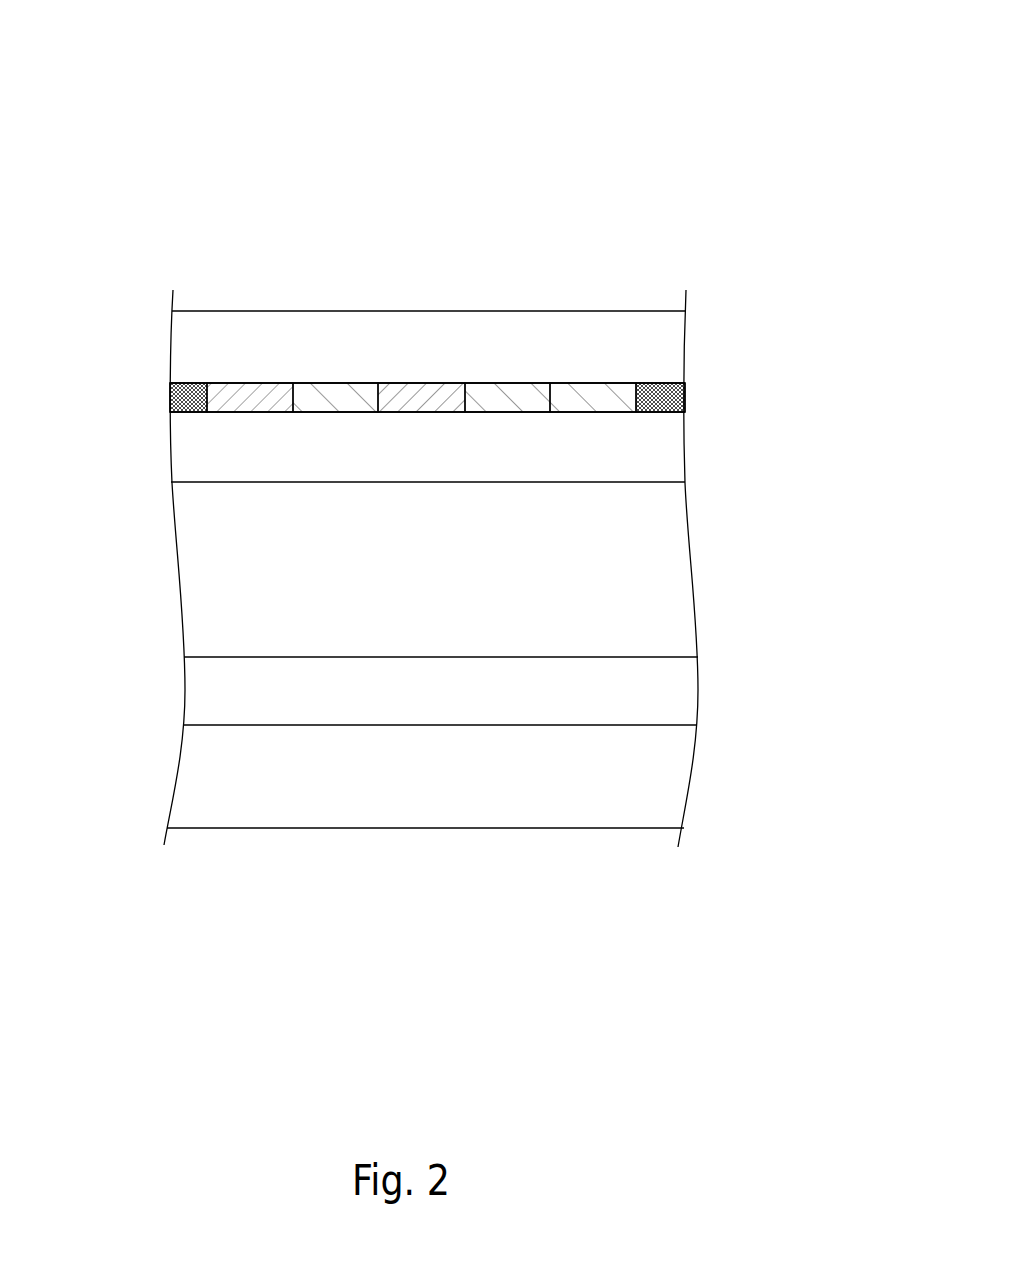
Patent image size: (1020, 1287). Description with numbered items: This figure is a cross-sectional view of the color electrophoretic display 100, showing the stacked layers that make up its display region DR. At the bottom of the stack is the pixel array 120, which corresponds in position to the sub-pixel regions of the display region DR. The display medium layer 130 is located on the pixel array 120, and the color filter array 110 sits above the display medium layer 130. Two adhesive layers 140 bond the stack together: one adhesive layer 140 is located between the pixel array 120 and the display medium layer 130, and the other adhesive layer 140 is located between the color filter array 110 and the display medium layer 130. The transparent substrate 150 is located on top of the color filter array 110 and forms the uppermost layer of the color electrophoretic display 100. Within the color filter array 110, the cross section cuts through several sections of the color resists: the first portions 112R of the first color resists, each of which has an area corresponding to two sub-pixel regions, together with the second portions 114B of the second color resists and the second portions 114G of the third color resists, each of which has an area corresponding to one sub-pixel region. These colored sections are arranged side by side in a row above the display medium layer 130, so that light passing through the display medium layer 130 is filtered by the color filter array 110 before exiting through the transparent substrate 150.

The color electrophoretic display 100 is at (881, 41).
The display region DR is at (735, 153).
The color filter array 110 is at (366, 330).
The first portions of the first color resists 112R is at (275, 390).
The second portions of the third color resists 114G is at (190, 388).
The second portions of the second color resists 114B is at (439, 392).
The pixel array 120 is at (684, 787).
The display medium layer 130 is at (684, 585).
The adhesive layers 140 is at (682, 439).
The transparent substrate 150 is at (681, 359).